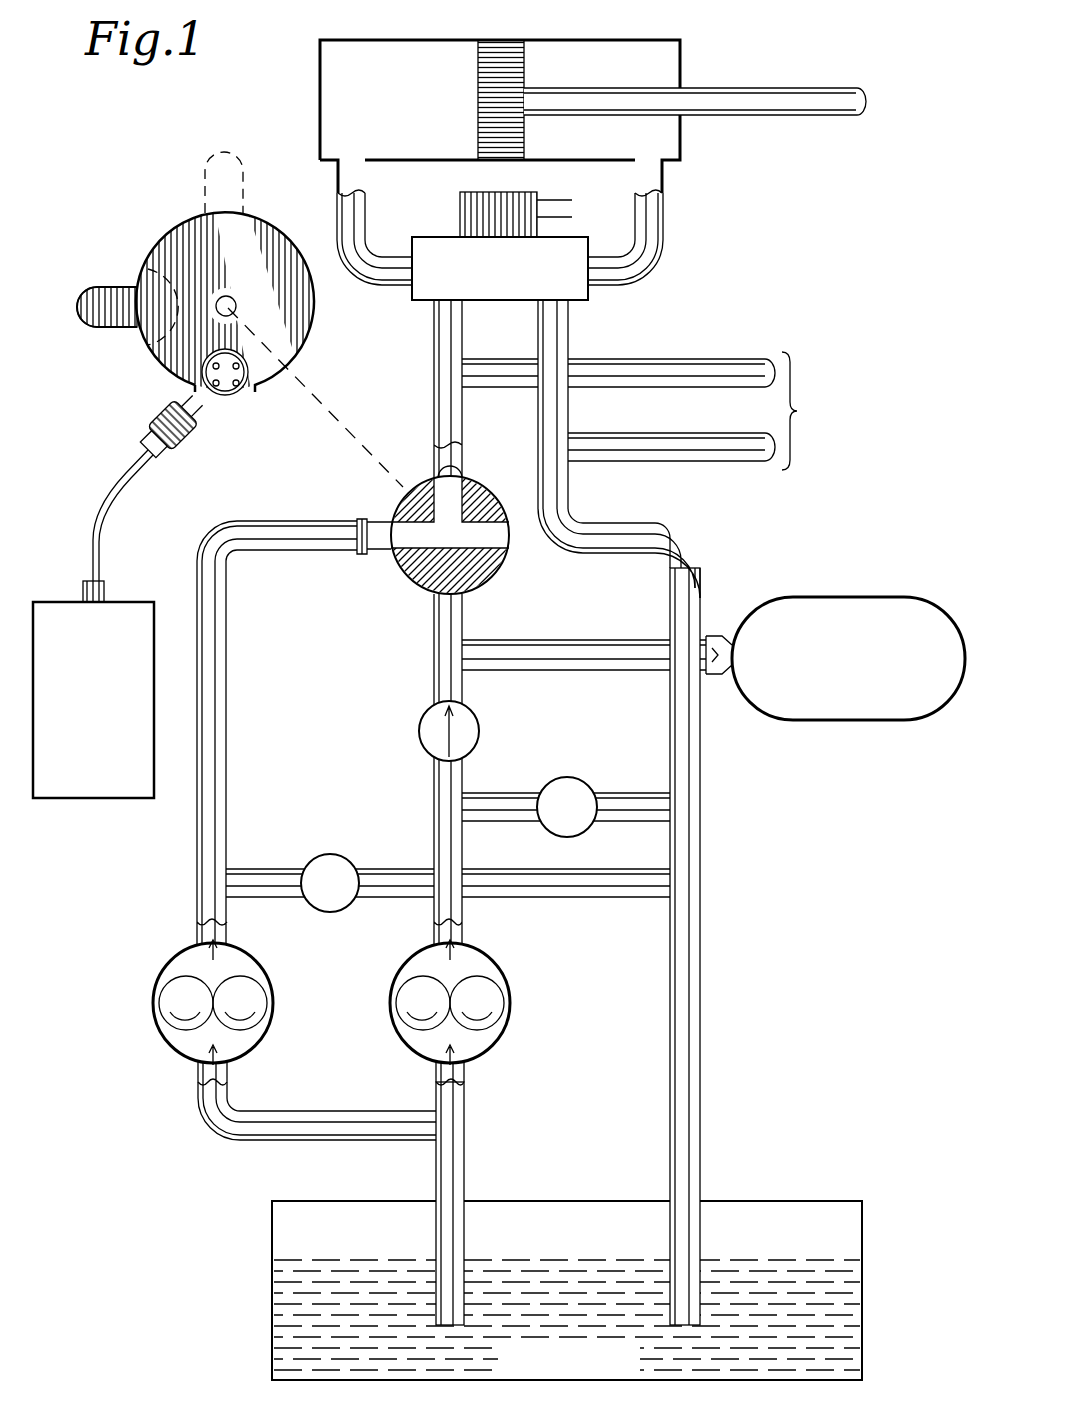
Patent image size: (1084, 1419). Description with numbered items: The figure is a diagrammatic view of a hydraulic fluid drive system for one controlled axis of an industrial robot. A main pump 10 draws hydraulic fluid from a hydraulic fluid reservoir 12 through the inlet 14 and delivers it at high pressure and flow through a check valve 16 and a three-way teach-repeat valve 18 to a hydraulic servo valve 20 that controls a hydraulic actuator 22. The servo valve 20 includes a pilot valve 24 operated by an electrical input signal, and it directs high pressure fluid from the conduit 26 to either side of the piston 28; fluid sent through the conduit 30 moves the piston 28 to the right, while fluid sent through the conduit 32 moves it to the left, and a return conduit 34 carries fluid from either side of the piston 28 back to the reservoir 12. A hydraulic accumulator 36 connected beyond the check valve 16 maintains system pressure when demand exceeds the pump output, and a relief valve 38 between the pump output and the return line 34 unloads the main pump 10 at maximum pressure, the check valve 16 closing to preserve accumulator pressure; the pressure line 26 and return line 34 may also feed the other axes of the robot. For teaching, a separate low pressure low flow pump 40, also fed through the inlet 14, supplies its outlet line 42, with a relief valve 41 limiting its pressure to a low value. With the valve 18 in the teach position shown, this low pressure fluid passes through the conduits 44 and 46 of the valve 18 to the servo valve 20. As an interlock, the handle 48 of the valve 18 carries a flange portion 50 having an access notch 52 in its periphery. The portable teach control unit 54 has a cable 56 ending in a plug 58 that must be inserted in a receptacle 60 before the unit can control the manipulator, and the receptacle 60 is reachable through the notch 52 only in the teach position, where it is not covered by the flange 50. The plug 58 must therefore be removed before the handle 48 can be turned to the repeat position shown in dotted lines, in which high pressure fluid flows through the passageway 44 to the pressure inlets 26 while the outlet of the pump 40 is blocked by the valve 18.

The main pump 10 is at (500, 966).
The hydraulic fluid reservoir 12 is at (862, 1278).
The inlet 14 is at (436, 1162).
The check valve 16 is at (419, 736).
The three-way teach-repeat valve 18 is at (444, 523).
The hydraulic servo valve 20 is at (496, 261).
The hydraulic actuator 22 is at (593, 99).
The pilot valve 24 is at (462, 212).
The conduit 26 is at (434, 407).
The piston 28 is at (478, 62).
The conduit 30 is at (380, 268).
The conduit 32 is at (650, 266).
The return conduit 34 is at (569, 418).
The hydraulic accumulator 36 is at (858, 597).
The relief valve 38 is at (577, 778).
The low pressure low flow pump 40 is at (166, 962).
The relief valve 41 is at (330, 855).
The outlet line 42 is at (227, 729).
The conduit 44 is at (401, 576).
The conduit 46 is at (456, 477).
The handle 48 is at (101, 325).
The flange portion 50 is at (225, 307).
The access notch 52 is at (250, 393).
The portable teach control unit 54 is at (90, 800).
The cable 56 is at (91, 498).
The plug 58 is at (180, 447).
The receptacle 60 is at (227, 398).